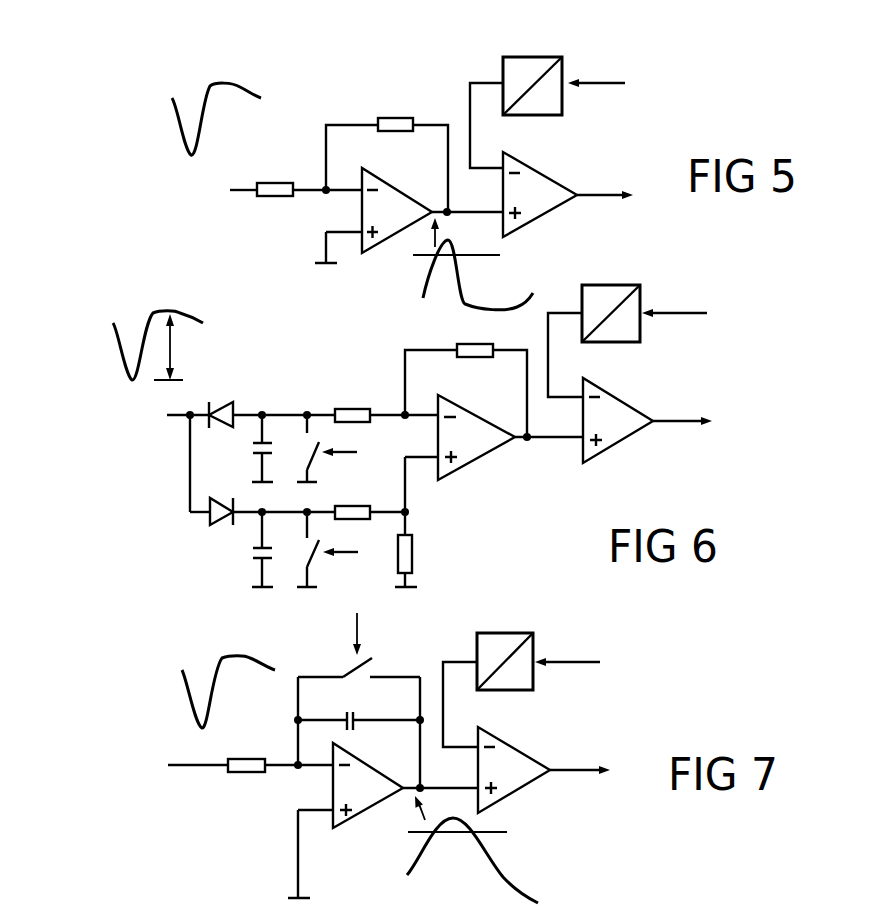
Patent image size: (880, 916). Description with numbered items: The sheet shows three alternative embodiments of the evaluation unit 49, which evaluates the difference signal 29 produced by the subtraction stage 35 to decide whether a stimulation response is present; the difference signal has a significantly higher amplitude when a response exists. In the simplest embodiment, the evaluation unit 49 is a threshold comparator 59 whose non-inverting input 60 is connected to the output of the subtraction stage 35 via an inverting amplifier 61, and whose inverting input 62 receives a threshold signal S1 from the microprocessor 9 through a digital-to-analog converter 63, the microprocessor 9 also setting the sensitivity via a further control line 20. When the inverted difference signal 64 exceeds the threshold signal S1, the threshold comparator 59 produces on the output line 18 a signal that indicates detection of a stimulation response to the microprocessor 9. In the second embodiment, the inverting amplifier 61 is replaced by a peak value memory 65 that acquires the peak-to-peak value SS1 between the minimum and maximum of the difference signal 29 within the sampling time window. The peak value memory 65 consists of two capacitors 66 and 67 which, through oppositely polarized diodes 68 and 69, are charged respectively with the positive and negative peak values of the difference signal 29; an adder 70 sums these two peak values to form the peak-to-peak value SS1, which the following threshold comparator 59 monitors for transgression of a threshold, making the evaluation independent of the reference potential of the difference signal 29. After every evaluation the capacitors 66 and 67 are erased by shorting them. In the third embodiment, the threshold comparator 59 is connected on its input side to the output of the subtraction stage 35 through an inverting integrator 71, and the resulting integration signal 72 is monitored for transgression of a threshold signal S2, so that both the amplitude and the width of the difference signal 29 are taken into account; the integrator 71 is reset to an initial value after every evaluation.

In FIG. 5, the microprocessor 9 is at (649, 141).
In FIG. 6, the microprocessor 9 is at (535, 436).
In FIG. 7, the microprocessor 9 is at (491, 687).
In FIG. 5, the output line 18 is at (595, 197).
In FIG. 6, the output line 18 is at (670, 423).
In FIG. 7, the output line 18 is at (570, 773).
In FIG. 5, the further control line 20 is at (592, 86).
In FIG. 6, the further control line 20 is at (678, 317).
In FIG. 7, the further control line 20 is at (567, 665).
In FIG. 5, the difference signal 29 is at (203, 117).
In FIG. 6, the difference signal 29 is at (121, 331).
In FIG. 7, the difference signal 29 is at (208, 680).
In FIG. 5, the subtraction stage 35 is at (202, 143).
In FIG. 6, the subtraction stage 35 is at (172, 404).
In FIG. 7, the subtraction stage 35 is at (200, 735).
In FIG. 5, the evaluation unit 49 is at (362, 98).
In FIG. 6, the evaluation unit 49 is at (518, 519).
In FIG. 7, the evaluation unit 49 is at (560, 843).
In FIG. 5, the threshold comparator 59 is at (537, 207).
In FIG. 6, the threshold comparator 59 is at (617, 435).
In FIG. 7, the threshold comparator 59 is at (513, 780).
In FIG. 5, the non-inverting input 60 is at (502, 207).
In FIG. 5, the inverting amplifier 61 is at (428, 174).
In FIG. 5, the inverting input 62 is at (500, 164).
In FIG. 5, the digital-to-analog converter 63 is at (533, 105).
In FIG. 6, the digital-to-analog converter 63 is at (607, 335).
In FIG. 5, the inverted difference signal 64 is at (430, 288).
In FIG. 6, the peak value memory 65 is at (355, 501).
In FIG. 6, the capacitor 66 is at (230, 425).
In FIG. 6, the capacitor 67 is at (253, 553).
In FIG. 6, the diode 68 is at (233, 407).
In FIG. 6, the diode 69 is at (217, 517).
In FIG. 6, the adder 70 is at (473, 447).
In FIG. 7, the inverting integrator 71 is at (408, 763).
In FIG. 7, the integration signal 72 is at (503, 877).
In FIG. 5, the threshold signal S1 is at (471, 248).
In FIG. 6, the peak-to-peak value SS1 is at (175, 345).
In FIG. 7, the threshold signal S2 is at (471, 827).